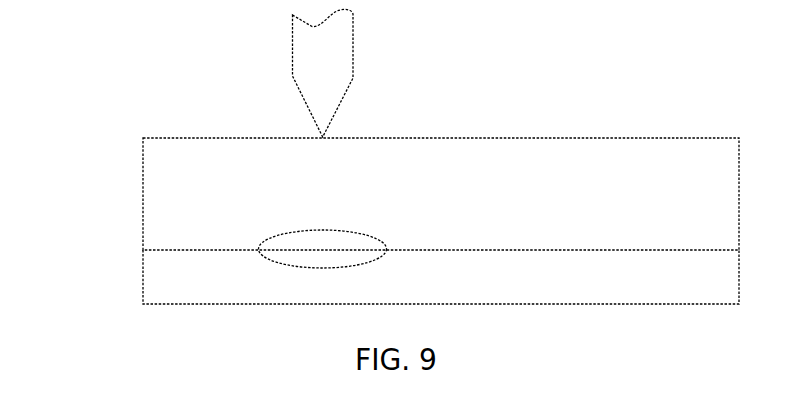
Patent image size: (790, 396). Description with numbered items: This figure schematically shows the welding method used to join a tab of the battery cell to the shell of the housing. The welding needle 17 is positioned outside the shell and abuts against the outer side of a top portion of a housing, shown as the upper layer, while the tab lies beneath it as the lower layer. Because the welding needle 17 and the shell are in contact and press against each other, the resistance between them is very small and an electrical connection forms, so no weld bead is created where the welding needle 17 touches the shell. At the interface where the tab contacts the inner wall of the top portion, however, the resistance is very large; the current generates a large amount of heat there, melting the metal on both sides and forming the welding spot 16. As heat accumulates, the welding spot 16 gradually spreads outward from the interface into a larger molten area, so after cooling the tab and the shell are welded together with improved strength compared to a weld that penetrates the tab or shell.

The welding needle 17 is at (329, 95).
The welding spot 16 is at (316, 249).